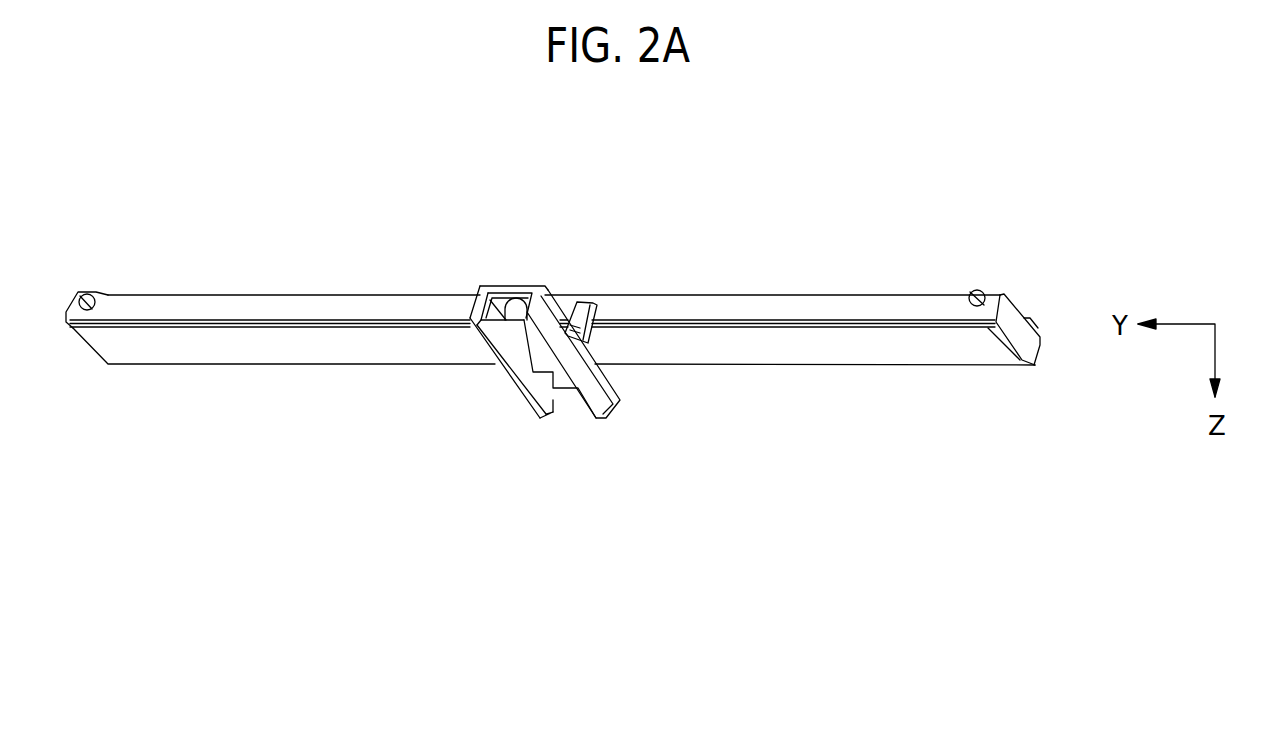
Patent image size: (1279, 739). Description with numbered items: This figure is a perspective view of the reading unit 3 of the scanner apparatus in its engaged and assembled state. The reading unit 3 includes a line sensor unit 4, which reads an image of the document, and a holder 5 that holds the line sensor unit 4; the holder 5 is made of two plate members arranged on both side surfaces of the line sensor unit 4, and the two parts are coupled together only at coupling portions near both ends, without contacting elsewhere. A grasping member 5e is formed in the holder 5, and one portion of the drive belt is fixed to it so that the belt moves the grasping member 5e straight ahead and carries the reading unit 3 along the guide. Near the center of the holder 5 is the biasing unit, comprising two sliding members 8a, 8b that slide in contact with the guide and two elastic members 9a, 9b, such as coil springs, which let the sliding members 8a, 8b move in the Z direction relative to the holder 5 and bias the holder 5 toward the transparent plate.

The reading unit 3 is at (143, 237).
The line sensor unit 4 is at (896, 350).
The holder 5 is at (848, 300).
The grasping member 5e is at (603, 337).
The sliding member 8a is at (498, 345).
The sliding member 8b is at (556, 406).
The elastic member 9a is at (510, 288).
The elastic member 9b is at (604, 278).